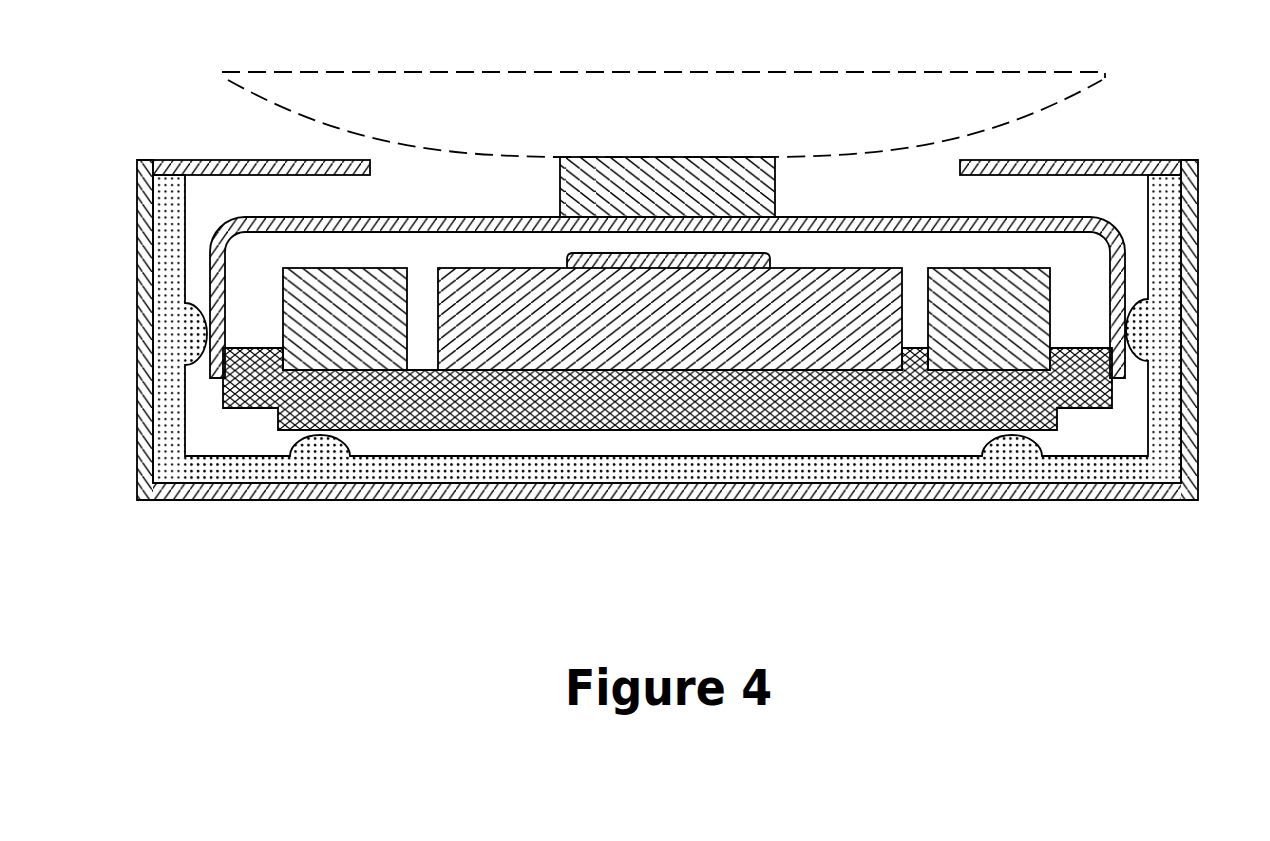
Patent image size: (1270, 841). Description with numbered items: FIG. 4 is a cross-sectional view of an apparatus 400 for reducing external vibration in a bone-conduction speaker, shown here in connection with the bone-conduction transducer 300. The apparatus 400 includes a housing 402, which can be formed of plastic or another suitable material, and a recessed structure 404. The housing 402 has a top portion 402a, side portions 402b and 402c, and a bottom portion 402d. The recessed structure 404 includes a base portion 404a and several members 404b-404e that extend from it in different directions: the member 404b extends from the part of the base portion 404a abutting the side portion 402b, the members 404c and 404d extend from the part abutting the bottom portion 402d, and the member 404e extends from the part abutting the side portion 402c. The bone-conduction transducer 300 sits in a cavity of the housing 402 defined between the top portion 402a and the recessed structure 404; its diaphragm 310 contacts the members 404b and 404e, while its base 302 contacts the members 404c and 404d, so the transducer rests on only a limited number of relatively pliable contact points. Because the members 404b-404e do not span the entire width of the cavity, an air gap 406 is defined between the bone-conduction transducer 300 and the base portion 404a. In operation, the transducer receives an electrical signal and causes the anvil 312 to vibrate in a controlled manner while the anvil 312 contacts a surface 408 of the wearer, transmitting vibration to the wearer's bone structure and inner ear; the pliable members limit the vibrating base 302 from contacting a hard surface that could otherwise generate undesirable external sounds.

The bone-conduction transducer 300 is at (667, 366).
The base 302 is at (715, 422).
The diaphragm 310 is at (922, 217).
The anvil 312 is at (775, 192).
The apparatus 400 is at (661, 316).
The housing 402 is at (668, 322).
The top portion 402a is at (233, 166).
The side portion 402b is at (145, 405).
The side portion 402c is at (1190, 392).
The bottom portion 402d is at (440, 492).
The recessed structure 404 is at (661, 367).
The base portion 404a is at (870, 470).
The member 404b is at (197, 333).
The member 404c is at (318, 447).
The member 404d is at (1013, 447).
The member 404e is at (1142, 330).
The air gap 406 is at (218, 198).
The surface 408 is at (1077, 101).